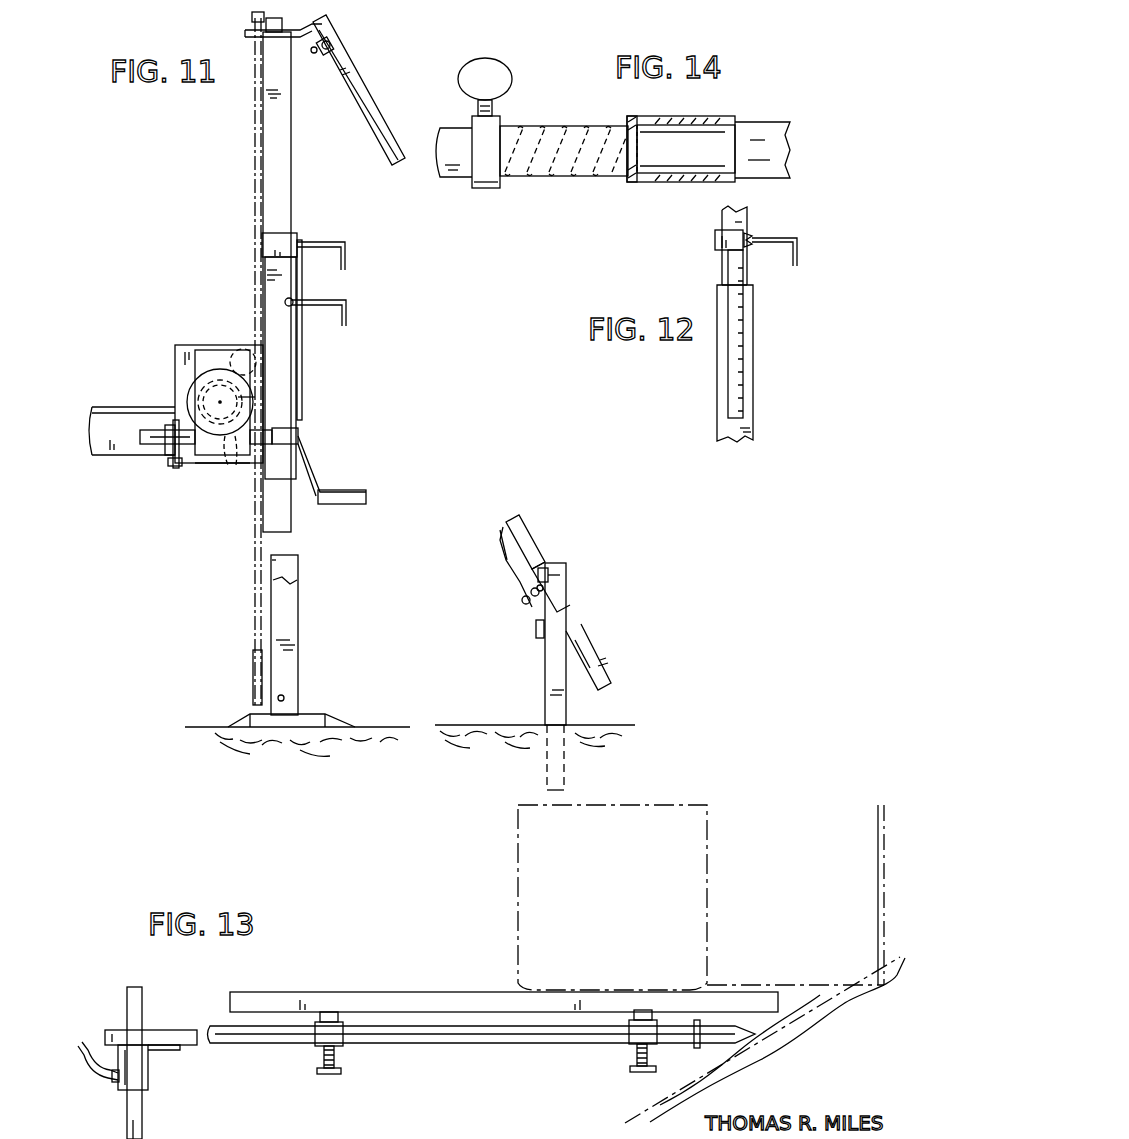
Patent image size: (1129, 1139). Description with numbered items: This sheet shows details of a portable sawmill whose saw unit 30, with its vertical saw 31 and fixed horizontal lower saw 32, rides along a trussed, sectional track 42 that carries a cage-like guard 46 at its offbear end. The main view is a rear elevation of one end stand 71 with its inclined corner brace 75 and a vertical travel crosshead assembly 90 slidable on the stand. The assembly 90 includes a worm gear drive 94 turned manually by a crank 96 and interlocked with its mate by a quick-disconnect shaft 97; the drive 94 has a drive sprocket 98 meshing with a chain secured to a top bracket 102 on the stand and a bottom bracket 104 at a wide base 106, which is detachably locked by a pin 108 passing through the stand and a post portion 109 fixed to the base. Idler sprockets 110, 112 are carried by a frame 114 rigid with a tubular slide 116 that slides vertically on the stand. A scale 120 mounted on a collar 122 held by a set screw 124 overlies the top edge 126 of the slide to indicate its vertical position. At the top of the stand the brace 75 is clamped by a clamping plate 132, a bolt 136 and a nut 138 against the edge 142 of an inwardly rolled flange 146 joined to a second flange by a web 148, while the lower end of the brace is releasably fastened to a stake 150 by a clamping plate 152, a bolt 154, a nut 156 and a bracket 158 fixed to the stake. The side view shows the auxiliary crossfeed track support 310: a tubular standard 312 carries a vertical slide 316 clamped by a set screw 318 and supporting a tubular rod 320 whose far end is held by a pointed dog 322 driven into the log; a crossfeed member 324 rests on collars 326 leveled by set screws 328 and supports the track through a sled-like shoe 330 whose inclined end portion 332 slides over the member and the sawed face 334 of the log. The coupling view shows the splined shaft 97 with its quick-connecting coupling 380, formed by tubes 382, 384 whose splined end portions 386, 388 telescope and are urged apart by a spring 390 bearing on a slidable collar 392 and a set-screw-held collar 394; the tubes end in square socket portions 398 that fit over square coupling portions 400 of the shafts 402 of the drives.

In FIG. 11, the saw unit 30 is at (222, 317).
In FIG. 13, the vertical saw 31 is at (878, 848).
In FIG. 13, the fixed horizontal lower saw 32 is at (776, 984).
In FIG. 13, the track 42 is at (713, 842).
In FIG. 13, the guard 46 is at (632, 1100).
In FIG. 11, the end stand 71 is at (293, 180).
In FIG. 12, the end stand 71 is at (750, 216).
In FIG. 11, the corner brace 75 is at (380, 102).
In FIG. 11, the vertical travel crosshead assembly 90 is at (195, 342).
In FIG. 11, the worm gear drive 94 is at (250, 400).
In FIG. 11, the crank 96 is at (367, 500).
In FIG. 11, the quick-disconnect shaft 97 is at (145, 446).
In FIG. 14, the quick-disconnect shaft 97 is at (686, 115).
In FIG. 11, the drive sprocket 98 is at (225, 447).
In FIG. 11, the top bracket 102 is at (255, 35).
In FIG. 11, the bottom bracket 104 is at (258, 708).
In FIG. 11, the base 106 is at (302, 716).
In FIG. 11, the pin 108 is at (286, 697).
In FIG. 11, the post portion 109 is at (298, 577).
In FIG. 11, the idler sprocket 110 is at (241, 348).
In FIG. 11, the idler sprocket 112 is at (240, 462).
In FIG. 11, the frame 114 is at (198, 470).
In FIG. 11, the tubular slide 116 is at (290, 333).
In FIG. 12, the tubular slide 116 is at (756, 353).
In FIG. 11, the scale 120 is at (302, 350).
In FIG. 12, the scale 120 is at (745, 318).
In FIG. 11, the collar 122 is at (292, 240).
In FIG. 12, the collar 122 is at (716, 241).
In FIG. 11, the set screw 124 is at (357, 256).
In FIG. 12, the set screw 124 is at (799, 245).
In FIG. 11, the top edge 126 is at (295, 292).
In FIG. 12, the top edge 126 is at (752, 289).
In FIG. 11, the clamping plate 132 is at (335, 50).
In FIG. 11, the bolt 136 is at (330, 43).
In FIG. 11, the nut 138 is at (316, 54).
In FIG. 11, the edge 142 is at (530, 592).
In FIG. 11, the flange 146 is at (522, 528).
In FIG. 11, the web 148 is at (530, 547).
In FIG. 11, the stake 150 is at (548, 663).
In FIG. 11, the clamping plate 152 is at (546, 570).
In FIG. 11, the bolt 154 is at (550, 587).
In FIG. 11, the nut 156 is at (528, 607).
In FIG. 11, the bracket 158 is at (540, 641).
In FIG. 13, the auxiliary crossfeed track support 310 is at (115, 1015).
In FIG. 13, the tubular standard 312 is at (142, 1118).
In FIG. 13, the vertical slide 316 is at (150, 1074).
In FIG. 13, the set screw 318 is at (93, 1077).
In FIG. 13, the tubular rod 320 is at (175, 1028).
In FIG. 13, the dog 322 is at (712, 1042).
In FIG. 13, the crossfeed member 324 is at (390, 990).
In FIG. 13, the collar 326 is at (320, 1044).
In FIG. 13, the set screw 328 is at (322, 1069).
In FIG. 13, the sled-like shoe 330 is at (625, 985).
In FIG. 13, the inclined end portion 332 is at (718, 982).
In FIG. 13, the sawed face 334 is at (850, 977).
In FIG. 14, the quick-connecting coupling 380 is at (585, 121).
In FIG. 14, the tube 382 is at (448, 180).
In FIG. 11, the tube 384 is at (150, 425).
In FIG. 14, the tube 384 is at (786, 119).
In FIG. 14, the splined end portion 386 is at (650, 165).
In FIG. 14, the splined end portion 388 is at (660, 183).
In FIG. 14, the spring 390 is at (560, 176).
In FIG. 14, the slidable collar 392 is at (631, 121).
In FIG. 14, the set screw held collar 394 is at (486, 190).
In FIG. 11, the square socket portion 398 is at (160, 428).
In FIG. 11, the square coupling portion 400 is at (172, 458).
In FIG. 11, the shaft 402 is at (184, 469).